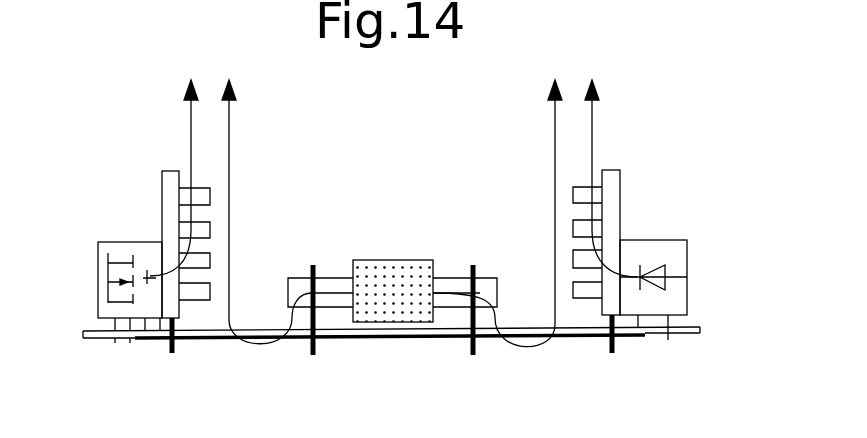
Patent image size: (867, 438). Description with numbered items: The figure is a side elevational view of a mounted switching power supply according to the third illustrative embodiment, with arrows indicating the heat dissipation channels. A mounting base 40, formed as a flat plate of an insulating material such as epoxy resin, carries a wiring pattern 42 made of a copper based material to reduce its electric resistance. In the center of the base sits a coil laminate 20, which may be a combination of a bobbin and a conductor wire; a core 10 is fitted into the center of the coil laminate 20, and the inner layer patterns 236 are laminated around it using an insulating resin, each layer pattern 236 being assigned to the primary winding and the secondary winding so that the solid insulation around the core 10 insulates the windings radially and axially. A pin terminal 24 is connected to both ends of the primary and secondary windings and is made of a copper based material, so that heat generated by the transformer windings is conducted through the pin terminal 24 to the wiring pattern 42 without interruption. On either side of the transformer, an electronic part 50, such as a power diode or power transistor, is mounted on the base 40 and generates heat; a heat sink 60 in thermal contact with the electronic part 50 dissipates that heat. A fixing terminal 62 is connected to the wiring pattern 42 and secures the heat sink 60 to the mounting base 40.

The core 10 is at (385, 262).
The coil laminate 20 is at (335, 285).
The inner layer pattern 236 is at (452, 292).
The pin terminal 24 is at (478, 345).
The mounting base 40 is at (385, 340).
The wiring pattern 42 is at (180, 340).
The electronic part 50 is at (673, 255).
The heat sink 60 is at (610, 174).
The fixing terminal 62 is at (616, 345).